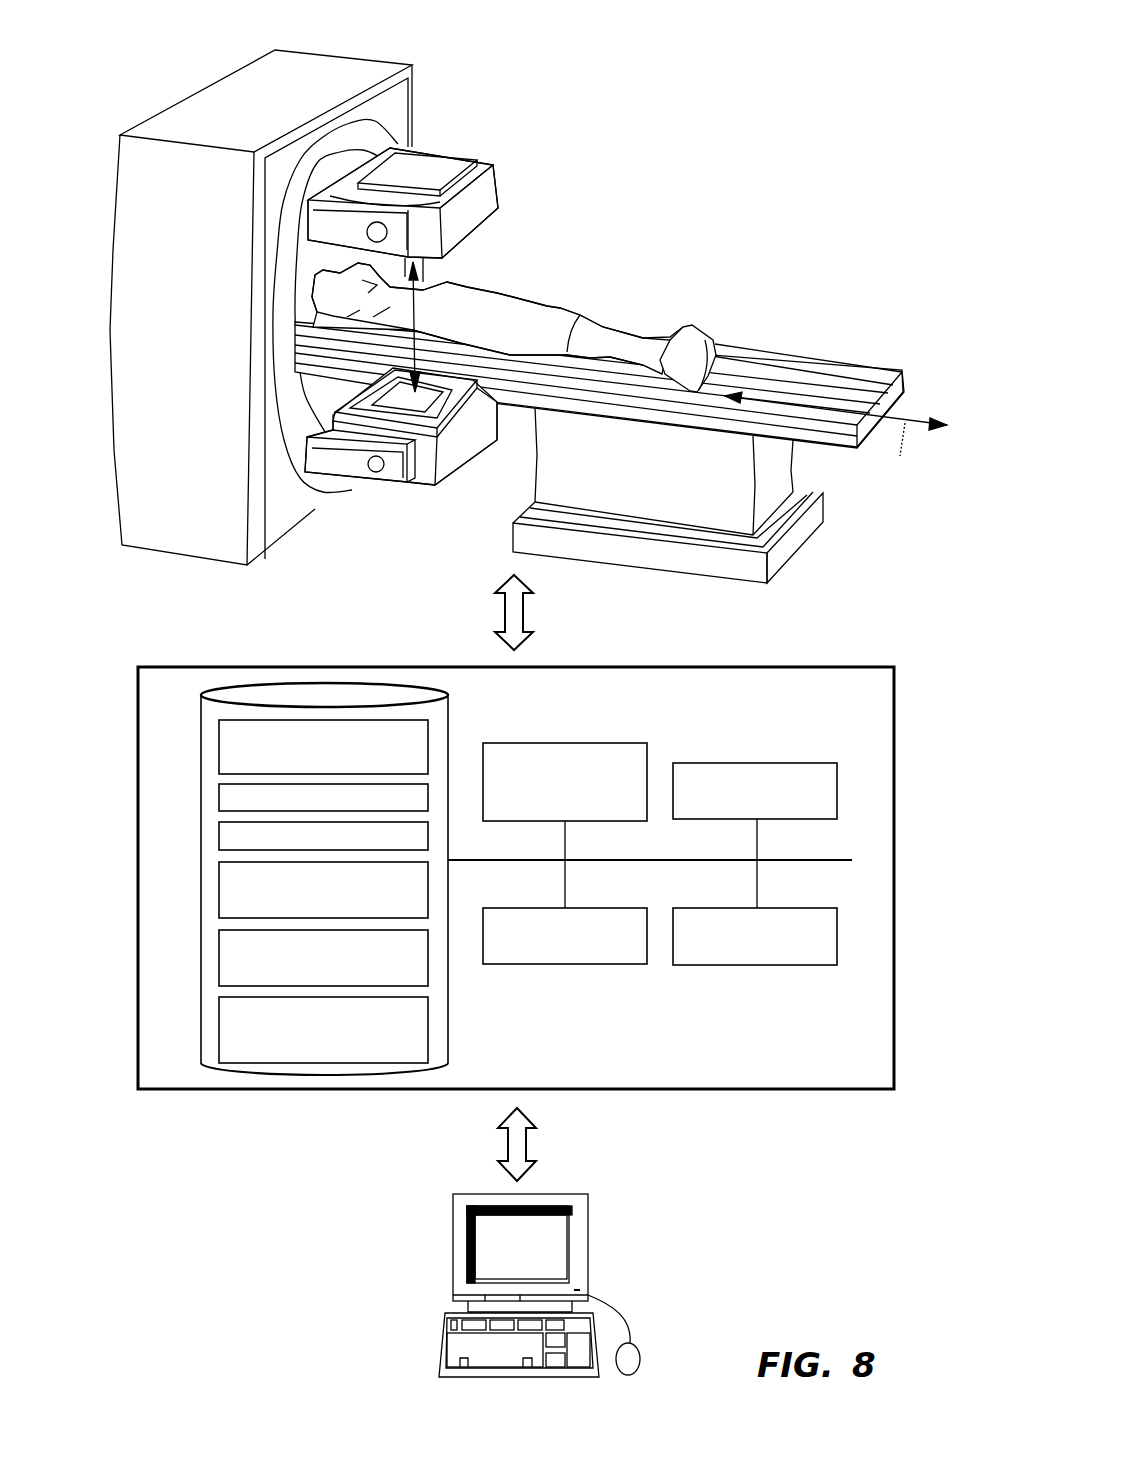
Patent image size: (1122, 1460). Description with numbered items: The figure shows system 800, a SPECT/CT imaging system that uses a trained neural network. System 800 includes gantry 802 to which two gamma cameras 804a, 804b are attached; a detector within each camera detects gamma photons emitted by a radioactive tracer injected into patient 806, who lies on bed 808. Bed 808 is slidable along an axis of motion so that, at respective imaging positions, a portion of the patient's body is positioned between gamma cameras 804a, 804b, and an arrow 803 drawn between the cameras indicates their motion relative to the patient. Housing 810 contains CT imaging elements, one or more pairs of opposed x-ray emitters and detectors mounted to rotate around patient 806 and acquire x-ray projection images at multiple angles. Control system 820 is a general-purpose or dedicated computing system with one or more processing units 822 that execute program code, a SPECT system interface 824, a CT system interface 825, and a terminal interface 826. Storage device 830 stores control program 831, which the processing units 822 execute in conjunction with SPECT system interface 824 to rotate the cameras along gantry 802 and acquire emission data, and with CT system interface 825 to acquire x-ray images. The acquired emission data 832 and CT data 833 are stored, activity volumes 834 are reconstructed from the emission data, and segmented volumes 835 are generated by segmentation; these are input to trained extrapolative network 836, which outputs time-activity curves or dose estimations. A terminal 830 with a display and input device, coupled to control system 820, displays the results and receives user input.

The system 800 is at (528, 293).
The gantry 802 is at (331, 497).
The detector motion arrow 803 is at (437, 290).
The gamma camera 804a is at (447, 462).
The gamma camera 804b is at (487, 200).
The patient 806 is at (615, 338).
The bed 808 is at (702, 338).
The housing 810 is at (390, 62).
The control system 820 is at (871, 710).
The processing units 822 is at (597, 908).
The SPECT system interface 824 is at (605, 743).
The CT system interface 825 is at (787, 763).
The terminal interface 826 is at (787, 908).
The storage device 830 is at (440, 742).
The control program 831 is at (219, 742).
The emission data 832 is at (219, 795).
The CT data 833 is at (219, 833).
The activity volumes 834 is at (219, 885).
The segmented volumes 835 is at (219, 958).
The trained extrapolative network 836 is at (219, 1028).